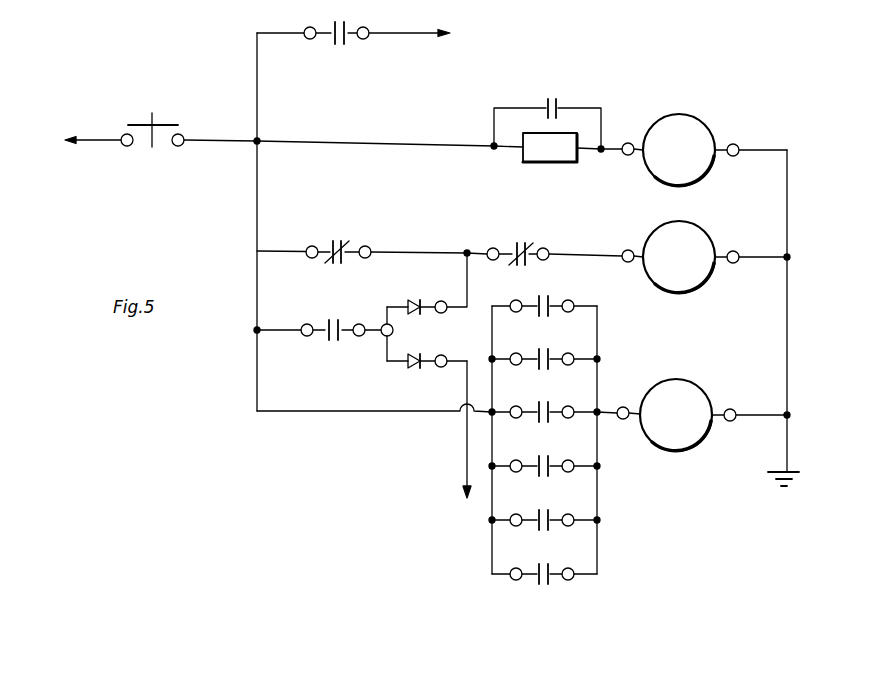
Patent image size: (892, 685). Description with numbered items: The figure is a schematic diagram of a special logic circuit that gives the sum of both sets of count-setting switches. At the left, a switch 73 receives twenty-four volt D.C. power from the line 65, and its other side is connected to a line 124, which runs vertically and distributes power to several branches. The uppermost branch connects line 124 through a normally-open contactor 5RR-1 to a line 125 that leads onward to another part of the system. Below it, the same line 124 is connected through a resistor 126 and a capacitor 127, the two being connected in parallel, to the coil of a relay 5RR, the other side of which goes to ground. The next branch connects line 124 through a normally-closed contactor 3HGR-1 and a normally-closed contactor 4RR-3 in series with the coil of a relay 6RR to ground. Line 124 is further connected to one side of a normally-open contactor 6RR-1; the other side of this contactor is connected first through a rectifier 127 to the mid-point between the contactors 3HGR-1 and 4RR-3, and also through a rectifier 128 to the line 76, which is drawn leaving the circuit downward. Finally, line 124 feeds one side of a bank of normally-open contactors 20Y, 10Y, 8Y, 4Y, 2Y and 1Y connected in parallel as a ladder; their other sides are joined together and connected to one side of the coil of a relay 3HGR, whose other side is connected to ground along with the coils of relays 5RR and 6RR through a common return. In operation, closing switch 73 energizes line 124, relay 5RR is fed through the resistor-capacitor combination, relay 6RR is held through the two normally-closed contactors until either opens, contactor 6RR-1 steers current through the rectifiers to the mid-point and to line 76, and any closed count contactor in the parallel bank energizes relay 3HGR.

The line 65 is at (89, 138).
The switch 73 is at (189, 143).
The line 124 is at (257, 220).
The line 125 is at (413, 33).
The resistor 126 is at (550, 163).
The capacitor / rectifier 127 is at (547, 99).
The rectifier 128 is at (414, 367).
The line 76 is at (465, 455).
The relay 5RR is at (710, 126).
The relay 6RR is at (710, 238).
The relay 3HGR is at (706, 393).
The normally-open contactor 5RR-1 is at (346, 44).
The normally-closed contactor 3HGR-1 is at (332, 249).
The normally-closed contactor 4RR-3 is at (516, 256).
The normally-open contactor 6RR-1 is at (331, 331).
The normally-open contactor 20Y is at (549, 303).
The normally-open contactor 10Y is at (549, 356).
The normally-open contactor 8Y is at (549, 409).
The normally-open contactor 4Y is at (549, 463).
The normally-open contactor 2Y is at (549, 517).
The normally-open contactor 1Y is at (549, 571).